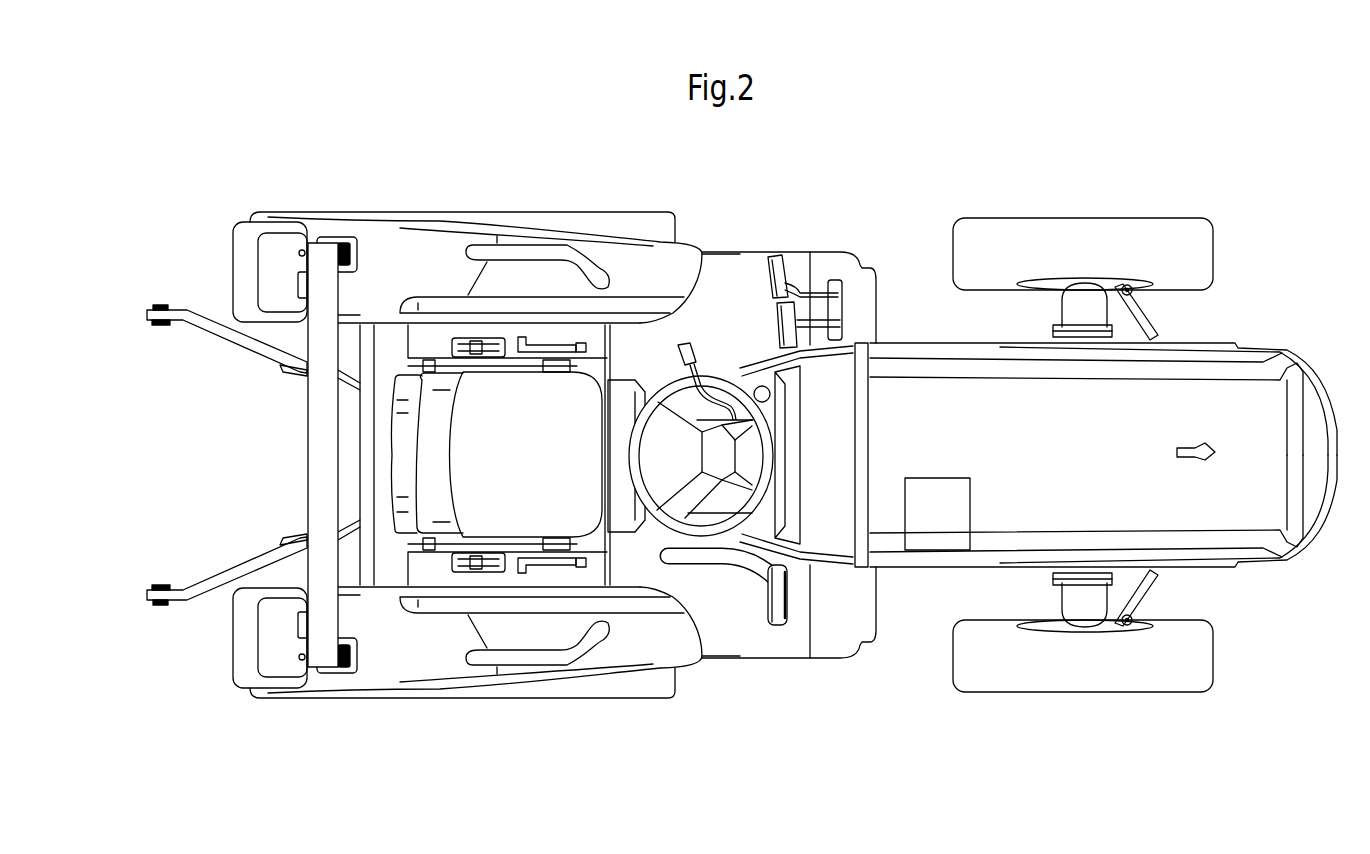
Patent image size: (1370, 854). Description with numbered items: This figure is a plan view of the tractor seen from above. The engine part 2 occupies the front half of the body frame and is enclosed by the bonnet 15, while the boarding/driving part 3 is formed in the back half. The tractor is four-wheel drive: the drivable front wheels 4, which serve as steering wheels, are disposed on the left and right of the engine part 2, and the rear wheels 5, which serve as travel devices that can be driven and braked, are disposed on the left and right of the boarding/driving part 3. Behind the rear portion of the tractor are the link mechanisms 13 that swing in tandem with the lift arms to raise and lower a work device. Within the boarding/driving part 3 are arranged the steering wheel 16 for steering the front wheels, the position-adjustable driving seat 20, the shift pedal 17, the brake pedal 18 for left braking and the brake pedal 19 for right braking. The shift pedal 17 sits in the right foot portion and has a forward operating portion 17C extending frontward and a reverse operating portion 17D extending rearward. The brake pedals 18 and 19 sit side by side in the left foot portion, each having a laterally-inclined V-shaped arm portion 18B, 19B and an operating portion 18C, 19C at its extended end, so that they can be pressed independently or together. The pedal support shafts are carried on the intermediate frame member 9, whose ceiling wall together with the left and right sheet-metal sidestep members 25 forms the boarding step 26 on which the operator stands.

The engine part 2 is at (1224, 338).
The boarding/driving part 3 is at (607, 445).
The front wheels 4 is at (1080, 222).
The rear wheels 5 is at (622, 212).
The intermediate frame member 9 is at (730, 508).
The link mechanisms 13 is at (194, 294).
The bonnet 15 is at (946, 390).
The steering wheel 16 is at (630, 457).
The shift pedal 17 is at (808, 629).
The forward operating portion 17C is at (773, 618).
The reverse operating portion 17D is at (667, 568).
The brake pedal for left braking 18 is at (776, 269).
The arm portion 18B is at (820, 290).
The operating portion 18C is at (768, 287).
The brake pedal for right braking 19 is at (816, 416).
The arm portion 19B is at (840, 323).
The operating portion 19C is at (777, 326).
The driving seat 20 is at (573, 387).
The sidestep members 25 is at (554, 445).
The boarding step 26 is at (726, 262).